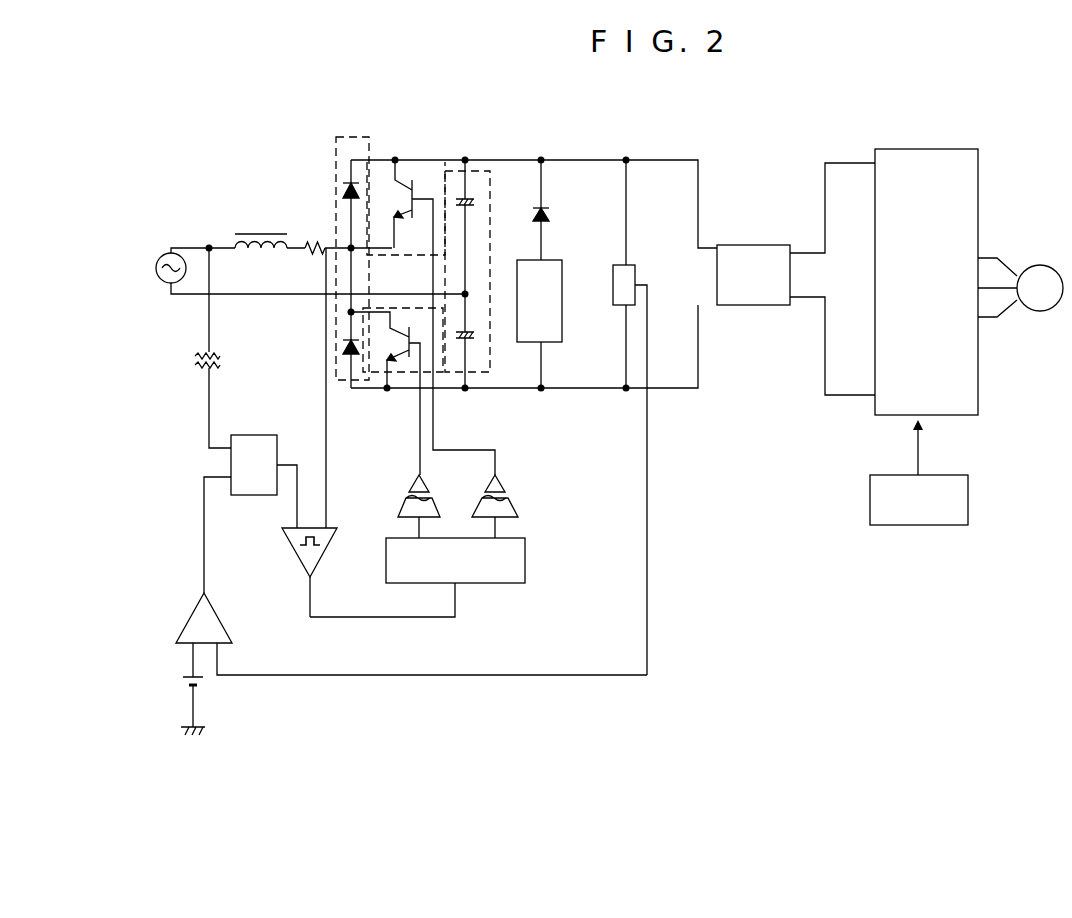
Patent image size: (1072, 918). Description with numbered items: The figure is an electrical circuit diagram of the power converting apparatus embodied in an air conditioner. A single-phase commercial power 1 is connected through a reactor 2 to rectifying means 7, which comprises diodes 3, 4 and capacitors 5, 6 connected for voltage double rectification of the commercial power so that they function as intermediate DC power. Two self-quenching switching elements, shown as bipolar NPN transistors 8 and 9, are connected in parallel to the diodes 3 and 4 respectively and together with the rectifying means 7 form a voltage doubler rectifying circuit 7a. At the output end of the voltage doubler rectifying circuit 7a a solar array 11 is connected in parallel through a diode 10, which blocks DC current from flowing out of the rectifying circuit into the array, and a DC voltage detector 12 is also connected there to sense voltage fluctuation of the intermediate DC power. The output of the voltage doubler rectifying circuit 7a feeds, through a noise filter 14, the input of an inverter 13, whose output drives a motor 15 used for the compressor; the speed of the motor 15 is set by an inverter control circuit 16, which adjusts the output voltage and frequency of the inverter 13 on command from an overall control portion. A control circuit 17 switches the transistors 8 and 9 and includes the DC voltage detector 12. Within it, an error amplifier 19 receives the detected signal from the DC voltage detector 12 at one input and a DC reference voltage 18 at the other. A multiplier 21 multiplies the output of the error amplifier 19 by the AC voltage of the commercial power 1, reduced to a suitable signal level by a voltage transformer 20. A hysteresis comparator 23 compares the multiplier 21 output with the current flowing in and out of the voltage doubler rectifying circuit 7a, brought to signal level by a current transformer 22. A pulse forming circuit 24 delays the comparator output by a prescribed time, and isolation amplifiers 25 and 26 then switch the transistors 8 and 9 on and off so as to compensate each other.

The single-phase commercial power 1 is at (163, 256).
The reactor 2 is at (250, 232).
The diode 3 is at (341, 186).
The diode 4 is at (350, 355).
The capacitor 5 is at (477, 172).
The capacitor 6 is at (470, 342).
The rectifying means 7 is at (345, 137).
The voltage doubler rectifying circuit 7a is at (397, 150).
The transistor 8 is at (422, 172).
The transistor 9 is at (413, 358).
The diode 10 is at (555, 208).
The solar array 11 is at (549, 338).
The DC voltage detector 12 is at (616, 305).
The inverter 13 is at (922, 163).
The noise filter 14 is at (752, 297).
The motor 15 is at (1043, 311).
The inverter control circuit 16 is at (918, 518).
The control circuit 17 is at (546, 658).
The DC reference voltage 18 is at (187, 685).
The error amplifier 19 is at (225, 628).
The voltage transformer 20 is at (195, 360).
The multiplier 21 is at (230, 463).
The current transformer 22 is at (310, 243).
The hysteresis comparator 23 is at (298, 560).
The pulse forming circuit 24 is at (497, 583).
The isolation amplifier 25 is at (406, 500).
The isolation amplifier 26 is at (512, 500).